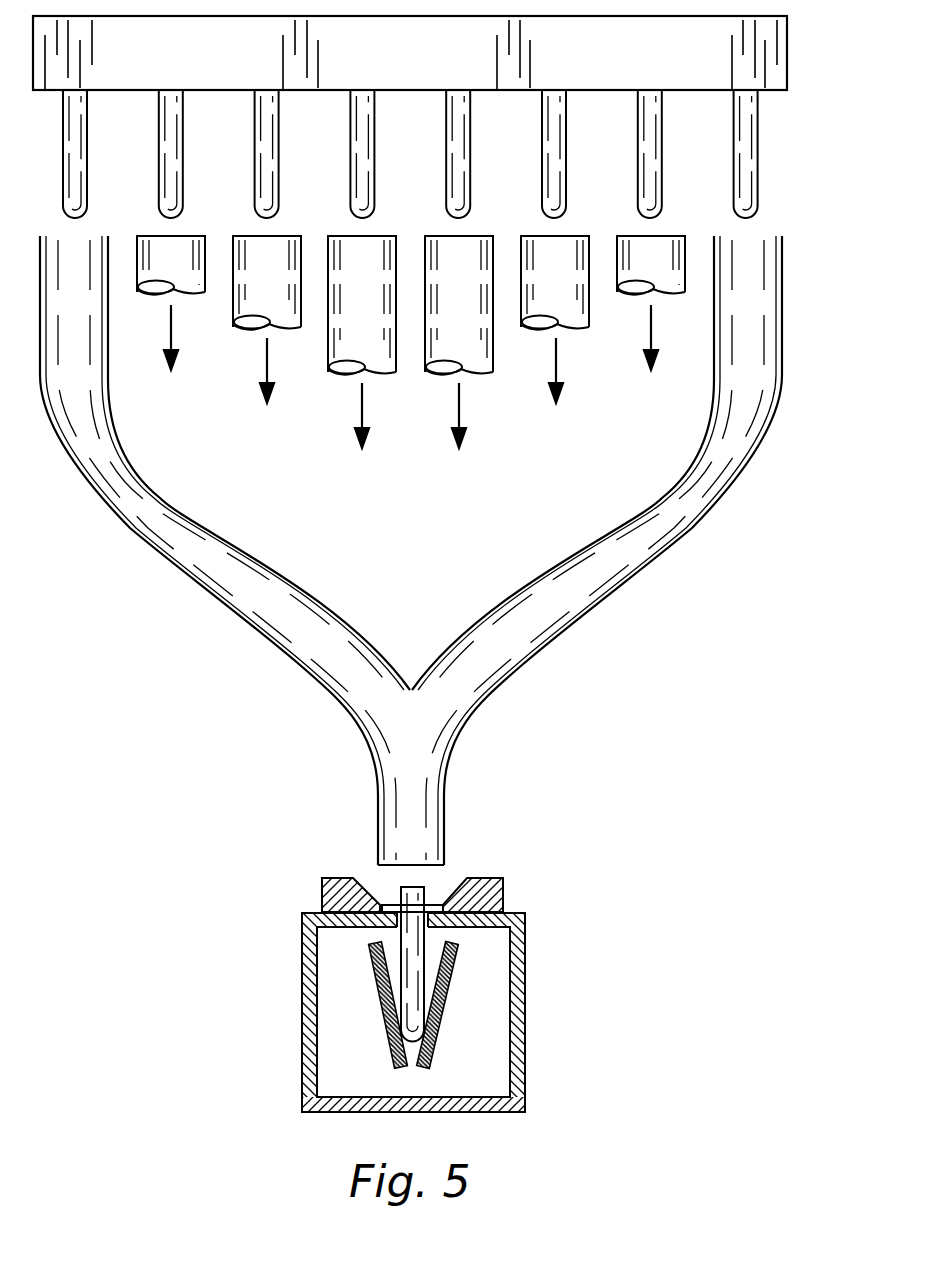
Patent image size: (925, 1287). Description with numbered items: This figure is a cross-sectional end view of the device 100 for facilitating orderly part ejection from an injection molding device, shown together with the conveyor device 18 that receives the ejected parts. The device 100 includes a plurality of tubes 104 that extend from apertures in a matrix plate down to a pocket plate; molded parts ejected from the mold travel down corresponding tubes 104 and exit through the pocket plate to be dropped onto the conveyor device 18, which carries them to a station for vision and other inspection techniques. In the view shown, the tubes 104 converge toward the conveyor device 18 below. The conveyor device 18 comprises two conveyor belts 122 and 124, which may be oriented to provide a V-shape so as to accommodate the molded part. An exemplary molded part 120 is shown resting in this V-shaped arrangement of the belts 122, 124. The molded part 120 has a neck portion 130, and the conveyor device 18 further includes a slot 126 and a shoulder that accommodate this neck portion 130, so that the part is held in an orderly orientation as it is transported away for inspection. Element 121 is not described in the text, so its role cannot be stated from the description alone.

The device 100 is at (426, 570).
The tubes 104 is at (196, 566).
The neck portion 130 is at (385, 905).
The plug 121 is at (503, 891).
The molded part 120 is at (413, 945).
The slot 126 is at (397, 929).
The conveyor belt 122 is at (445, 1003).
The conveyor belt 124 is at (380, 997).
The conveyor device 18 is at (525, 1065).